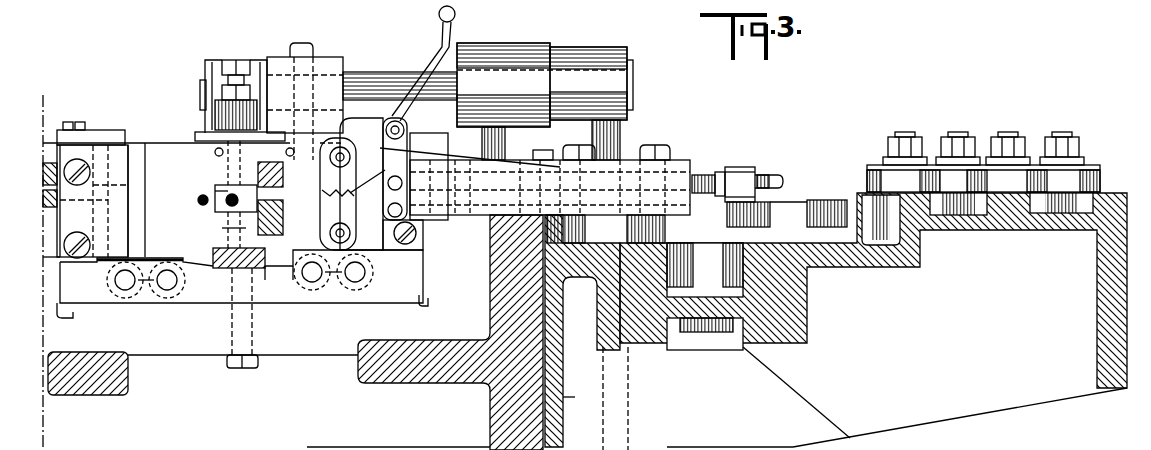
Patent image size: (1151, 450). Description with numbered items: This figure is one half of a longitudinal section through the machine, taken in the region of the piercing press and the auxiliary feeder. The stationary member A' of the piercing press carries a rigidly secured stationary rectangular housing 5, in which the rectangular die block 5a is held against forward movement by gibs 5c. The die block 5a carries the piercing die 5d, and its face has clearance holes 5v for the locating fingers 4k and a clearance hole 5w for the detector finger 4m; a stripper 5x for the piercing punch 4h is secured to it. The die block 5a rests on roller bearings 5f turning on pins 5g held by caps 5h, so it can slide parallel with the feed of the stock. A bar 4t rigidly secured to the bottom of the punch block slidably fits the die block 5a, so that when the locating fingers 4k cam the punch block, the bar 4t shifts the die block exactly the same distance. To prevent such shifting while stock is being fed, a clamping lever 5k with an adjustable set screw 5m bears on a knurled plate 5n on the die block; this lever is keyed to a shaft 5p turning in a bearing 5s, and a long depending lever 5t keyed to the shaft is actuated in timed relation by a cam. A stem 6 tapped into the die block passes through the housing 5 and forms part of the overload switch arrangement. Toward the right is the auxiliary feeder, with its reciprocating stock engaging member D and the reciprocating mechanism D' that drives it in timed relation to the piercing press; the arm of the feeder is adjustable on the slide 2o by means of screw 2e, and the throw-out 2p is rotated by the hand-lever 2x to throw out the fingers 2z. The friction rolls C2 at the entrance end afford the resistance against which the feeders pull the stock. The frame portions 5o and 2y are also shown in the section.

The stationary rectangular housing 5 is at (52, 158).
The stem 6 is at (47, 178).
The gibs 5c is at (66, 208).
The stationary member of the piercing press A' is at (147, 181).
The adjustable set screw 5m is at (229, 62).
The clamping lever 5k is at (204, 107).
The bottom plate 5o is at (196, 134).
The knurled plate 5n is at (279, 57).
The shaft 5p is at (378, 72).
The hand-lever 2x is at (439, 17).
The bearing 5s is at (497, 44).
The long depending lever 5t is at (622, 133).
The throw-out 2p is at (344, 134).
The clearance holes 5v is at (312, 196).
The piercing die 5d is at (222, 186).
The detector finger 4m is at (214, 192).
The clearance hole 5w is at (198, 200).
The piercing punch 4h is at (218, 210).
The stripper 5x is at (222, 228).
The locating fingers 4k is at (272, 158).
The bar 4t is at (220, 270).
The caps 5h is at (97, 268).
The pins 5g is at (113, 286).
The roller bearings 5f is at (158, 298).
The rectangular die block 5a is at (288, 270).
The reciprocating stock engaging member of the auxiliary feeder D is at (410, 241).
The reciprocating mechanism of the auxiliary feeder D' is at (730, 161).
The screw 2e is at (777, 176).
The slide 2o is at (808, 203).
The friction rolls C2 is at (988, 122).
The frame body 2y is at (805, 287).
The fingers 2z is at (648, 350).